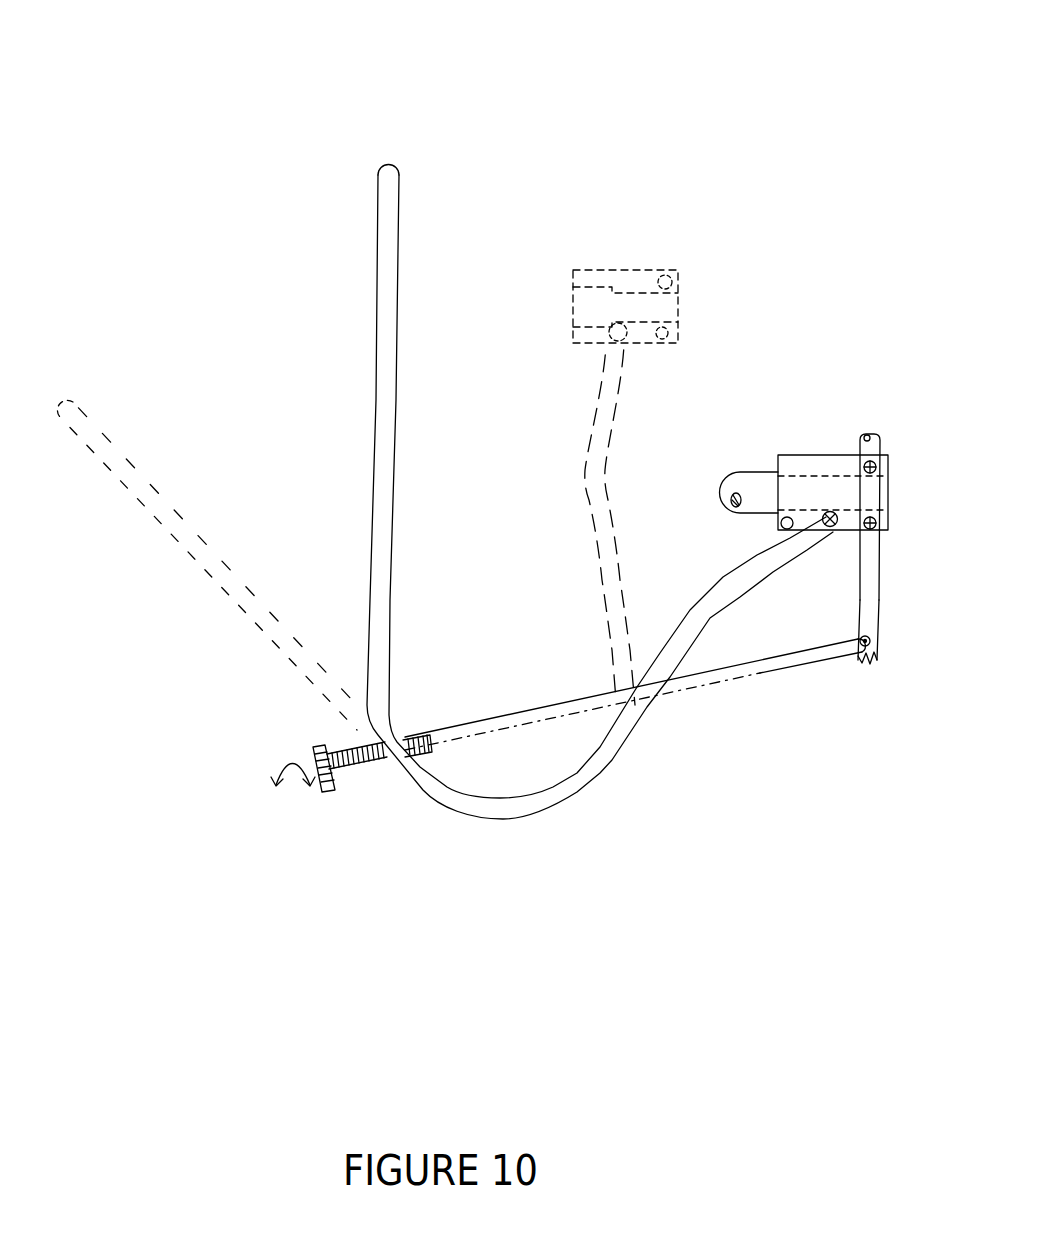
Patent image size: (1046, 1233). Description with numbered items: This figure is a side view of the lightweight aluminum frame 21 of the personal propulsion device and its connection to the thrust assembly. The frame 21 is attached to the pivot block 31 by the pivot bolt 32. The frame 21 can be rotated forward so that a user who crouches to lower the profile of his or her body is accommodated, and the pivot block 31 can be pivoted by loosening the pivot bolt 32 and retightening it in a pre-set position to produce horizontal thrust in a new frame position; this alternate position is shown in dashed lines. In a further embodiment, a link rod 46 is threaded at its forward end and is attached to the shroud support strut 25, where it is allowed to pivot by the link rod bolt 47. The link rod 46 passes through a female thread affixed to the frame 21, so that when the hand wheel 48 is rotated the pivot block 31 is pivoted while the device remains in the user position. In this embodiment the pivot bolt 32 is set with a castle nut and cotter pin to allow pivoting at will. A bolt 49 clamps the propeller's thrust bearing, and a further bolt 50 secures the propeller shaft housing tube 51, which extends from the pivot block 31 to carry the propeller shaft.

The frame 21 is at (388, 188).
The shroud support strut 25 is at (868, 617).
The pivot block 31 is at (800, 455).
The pivot bolt 32 is at (832, 511).
The link rod 46 is at (762, 668).
The link rod bolt 47 is at (855, 650).
The hand wheel 48 is at (330, 793).
The bolt 49 is at (875, 537).
The bolt 50 is at (778, 493).
The propeller shaft housing tube 51 is at (748, 473).